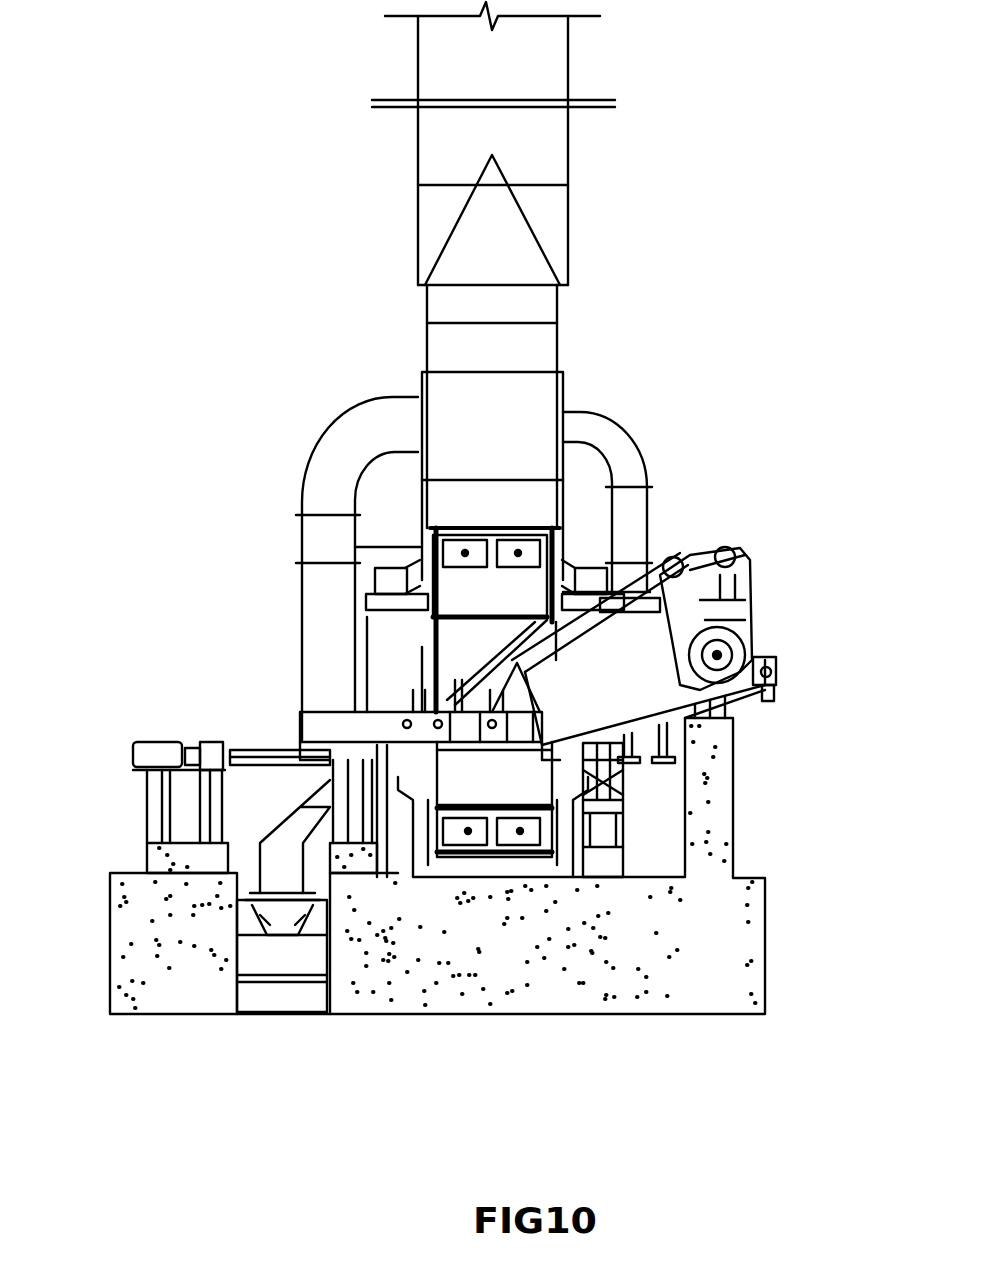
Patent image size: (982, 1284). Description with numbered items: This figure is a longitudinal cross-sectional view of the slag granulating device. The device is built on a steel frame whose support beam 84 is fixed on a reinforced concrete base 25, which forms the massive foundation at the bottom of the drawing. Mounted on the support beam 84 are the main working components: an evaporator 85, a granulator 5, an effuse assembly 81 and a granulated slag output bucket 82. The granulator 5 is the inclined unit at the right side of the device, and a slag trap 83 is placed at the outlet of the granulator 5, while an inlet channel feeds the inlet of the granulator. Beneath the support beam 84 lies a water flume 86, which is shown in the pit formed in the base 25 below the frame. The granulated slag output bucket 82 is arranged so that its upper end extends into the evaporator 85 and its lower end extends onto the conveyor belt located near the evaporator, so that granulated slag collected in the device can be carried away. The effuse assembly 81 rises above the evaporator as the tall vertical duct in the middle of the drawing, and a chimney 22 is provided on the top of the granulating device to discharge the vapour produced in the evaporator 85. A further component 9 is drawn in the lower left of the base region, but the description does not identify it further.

The chimney 22 is at (440, 75).
The effuse assembly 81 is at (440, 340).
The granulated slag output bucket 82 is at (470, 668).
The slag trap 83 is at (445, 690).
The support beam 84 is at (335, 722).
The evaporator 85 is at (160, 748).
The granulator 5 is at (700, 560).
The water flume 86 is at (458, 870).
The gear box 9 is at (235, 950).
The reinforced concrete base 25 is at (733, 940).